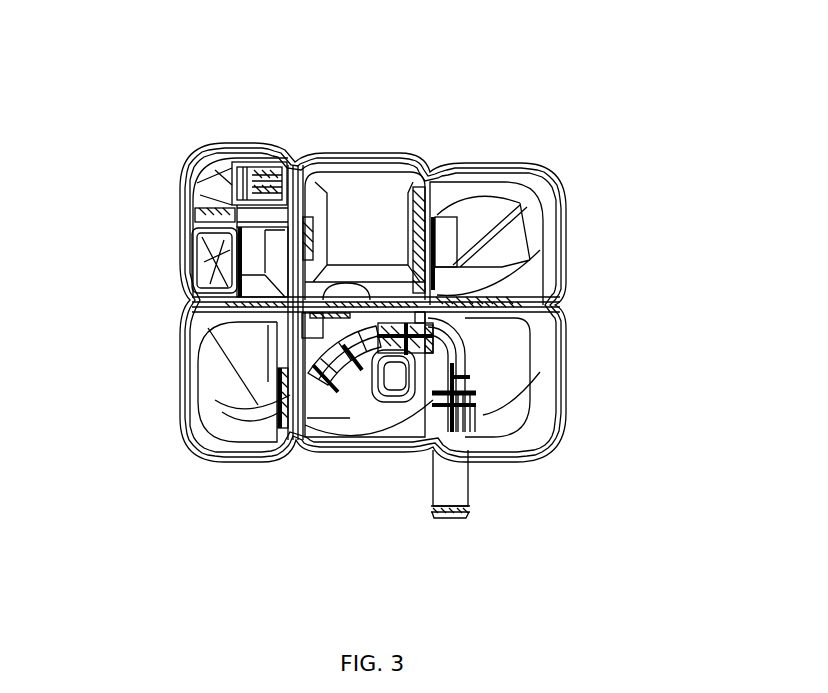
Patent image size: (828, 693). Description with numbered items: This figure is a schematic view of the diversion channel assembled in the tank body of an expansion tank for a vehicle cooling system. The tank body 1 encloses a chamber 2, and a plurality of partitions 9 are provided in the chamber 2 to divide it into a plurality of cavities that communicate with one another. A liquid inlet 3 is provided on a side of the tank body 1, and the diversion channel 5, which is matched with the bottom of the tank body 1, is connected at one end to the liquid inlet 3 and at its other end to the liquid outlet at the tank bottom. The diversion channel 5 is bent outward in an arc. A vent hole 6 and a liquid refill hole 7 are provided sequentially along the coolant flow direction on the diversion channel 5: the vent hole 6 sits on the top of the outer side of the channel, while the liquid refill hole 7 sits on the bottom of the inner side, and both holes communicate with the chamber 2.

The tank body 1 is at (396, 157).
The chamber 2 is at (325, 338).
The liquid inlet 3 is at (448, 517).
The diversion channel 5 is at (467, 348).
The vent hole 6 is at (392, 328).
The liquid refill hole 7 is at (375, 350).
The partitions 9 is at (298, 226).